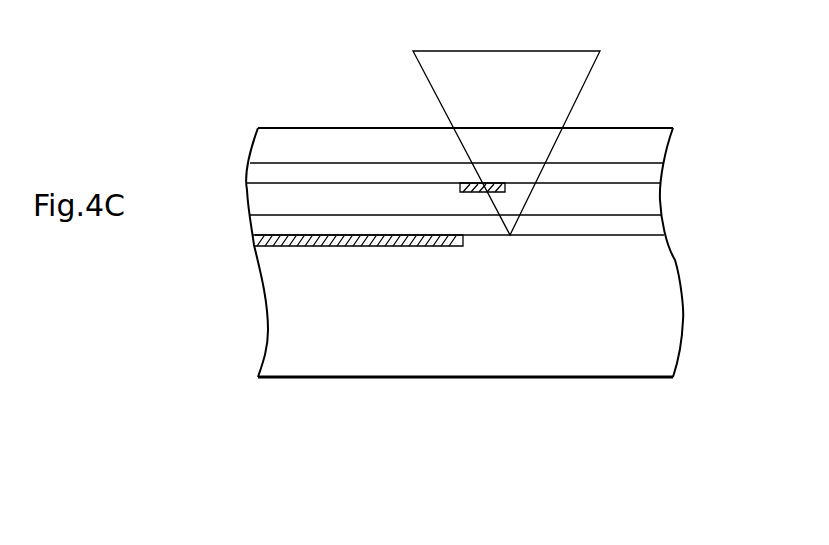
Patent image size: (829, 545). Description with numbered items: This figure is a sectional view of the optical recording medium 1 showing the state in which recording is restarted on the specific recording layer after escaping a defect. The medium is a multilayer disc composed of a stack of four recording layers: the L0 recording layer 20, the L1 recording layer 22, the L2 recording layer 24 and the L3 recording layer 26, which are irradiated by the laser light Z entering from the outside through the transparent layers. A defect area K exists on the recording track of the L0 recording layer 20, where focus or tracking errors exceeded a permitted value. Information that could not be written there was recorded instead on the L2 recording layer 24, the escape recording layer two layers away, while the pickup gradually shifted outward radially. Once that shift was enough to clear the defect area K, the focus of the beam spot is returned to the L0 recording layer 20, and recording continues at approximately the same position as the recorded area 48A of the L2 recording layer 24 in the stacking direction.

The optical recording medium 1 is at (703, 110).
The L0 recording layer 20 is at (648, 237).
The L1 recording layer 22 is at (645, 209).
The L2 recording layer 24 is at (640, 184).
The L3 recording layer 26 is at (643, 155).
The mask region 48A is at (306, 128).
The defect area K is at (470, 251).
The laser light Z is at (506, 127).